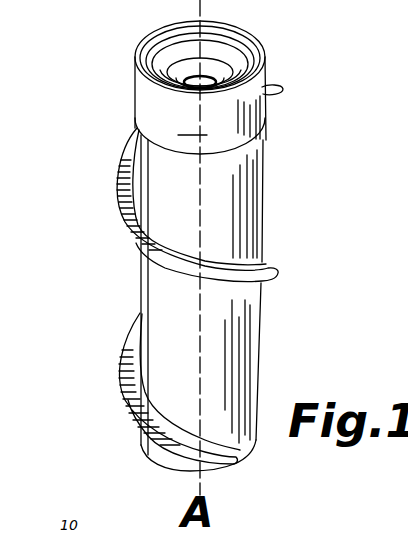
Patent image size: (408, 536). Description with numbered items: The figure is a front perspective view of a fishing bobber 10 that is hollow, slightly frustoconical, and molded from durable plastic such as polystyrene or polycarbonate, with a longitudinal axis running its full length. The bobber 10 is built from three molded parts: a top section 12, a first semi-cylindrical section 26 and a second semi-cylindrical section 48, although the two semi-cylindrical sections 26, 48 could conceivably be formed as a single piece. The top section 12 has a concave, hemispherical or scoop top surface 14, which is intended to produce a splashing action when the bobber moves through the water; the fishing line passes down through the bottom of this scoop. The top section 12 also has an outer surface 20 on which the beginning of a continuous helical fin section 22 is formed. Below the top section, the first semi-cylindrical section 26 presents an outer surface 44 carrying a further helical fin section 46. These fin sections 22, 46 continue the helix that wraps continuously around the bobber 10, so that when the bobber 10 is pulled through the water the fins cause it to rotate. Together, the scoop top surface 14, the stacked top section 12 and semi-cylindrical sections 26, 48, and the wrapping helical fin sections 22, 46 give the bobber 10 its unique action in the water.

The fishing bobber 10 is at (319, 62).
The top section 12 is at (136, 85).
The scoop top surface 14 is at (213, 47).
The outer surface 20 is at (192, 125).
The helical fin section 22 is at (282, 86).
The first semi-cylindrical section 26 is at (133, 253).
The outer surface 44 is at (135, 285).
The helical fin section 46 is at (127, 173).
The second semi-cylindrical section 48 is at (242, 213).